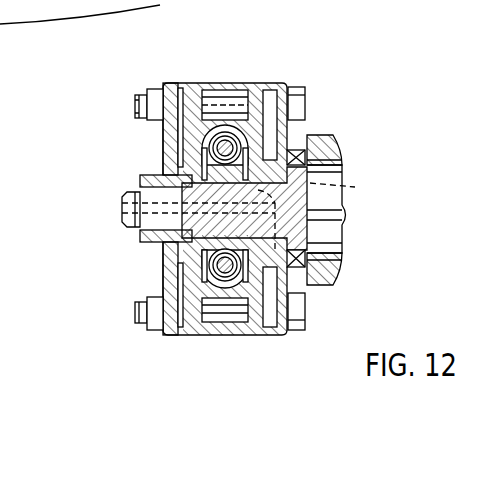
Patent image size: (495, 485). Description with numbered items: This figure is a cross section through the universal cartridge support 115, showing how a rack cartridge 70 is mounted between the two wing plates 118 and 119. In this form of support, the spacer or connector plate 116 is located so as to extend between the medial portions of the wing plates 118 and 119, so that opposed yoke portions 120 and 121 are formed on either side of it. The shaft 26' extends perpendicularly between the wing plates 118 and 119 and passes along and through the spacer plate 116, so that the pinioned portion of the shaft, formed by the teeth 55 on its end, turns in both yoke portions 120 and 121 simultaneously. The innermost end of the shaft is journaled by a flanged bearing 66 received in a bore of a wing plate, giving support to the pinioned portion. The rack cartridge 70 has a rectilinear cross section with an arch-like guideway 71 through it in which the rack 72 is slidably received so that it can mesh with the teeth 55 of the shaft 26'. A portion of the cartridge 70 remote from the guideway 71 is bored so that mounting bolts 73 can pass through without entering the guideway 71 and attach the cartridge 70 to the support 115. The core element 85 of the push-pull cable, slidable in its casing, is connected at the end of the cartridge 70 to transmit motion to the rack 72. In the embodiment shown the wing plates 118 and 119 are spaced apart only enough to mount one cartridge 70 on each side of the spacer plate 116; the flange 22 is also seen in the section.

The rack cartridge 70 is at (255, 82).
The guideway 71 is at (223, 117).
The rack 72 is at (202, 135).
The mounting bolts 73 is at (135, 102).
The core element 85 is at (237, 143).
The wing plate 118 is at (166, 151).
The teeth 55 is at (163, 163).
The flanged bearing 66 is at (140, 238).
The universal cartridge support 115 is at (168, 253).
The yoke portion 120 is at (178, 79).
The yoke portion 121 is at (279, 339).
The wing plate 119 is at (296, 152).
The flange 22 is at (337, 150).
The spacer plate 116 is at (349, 189).
The shaft 26' is at (366, 209).